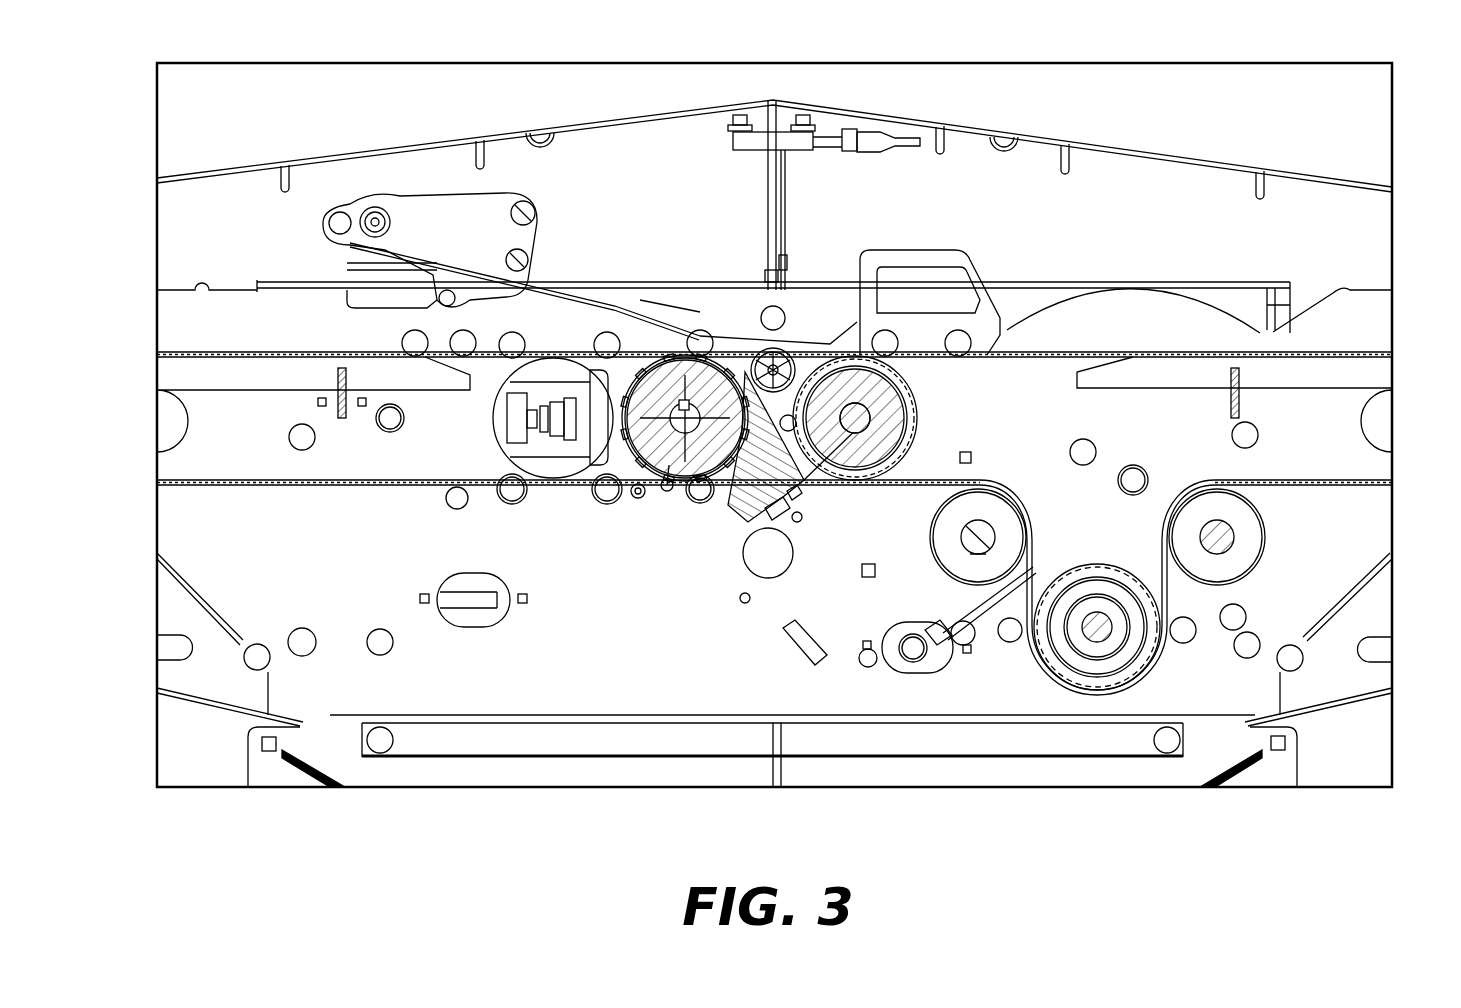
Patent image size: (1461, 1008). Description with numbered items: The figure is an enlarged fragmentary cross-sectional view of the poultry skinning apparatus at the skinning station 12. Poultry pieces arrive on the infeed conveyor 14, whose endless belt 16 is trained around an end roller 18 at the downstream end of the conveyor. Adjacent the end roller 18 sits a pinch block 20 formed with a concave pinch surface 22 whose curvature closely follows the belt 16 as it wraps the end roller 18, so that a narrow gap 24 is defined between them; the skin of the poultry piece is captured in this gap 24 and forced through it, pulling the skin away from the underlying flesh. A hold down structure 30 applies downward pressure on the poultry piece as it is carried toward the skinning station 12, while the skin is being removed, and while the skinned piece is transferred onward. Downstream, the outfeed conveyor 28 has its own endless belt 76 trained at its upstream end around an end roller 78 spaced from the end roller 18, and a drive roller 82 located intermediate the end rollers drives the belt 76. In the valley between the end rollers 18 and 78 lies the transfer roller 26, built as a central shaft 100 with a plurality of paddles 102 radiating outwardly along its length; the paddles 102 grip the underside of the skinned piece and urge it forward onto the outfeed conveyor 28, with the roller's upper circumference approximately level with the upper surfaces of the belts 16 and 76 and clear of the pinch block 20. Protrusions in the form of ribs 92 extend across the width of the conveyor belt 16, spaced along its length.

The skinning station 12 is at (700, 308).
The infeed conveyor 14 is at (490, 492).
The endless belt 16 is at (228, 483).
The end roller 18 is at (668, 470).
The pinch block 20 is at (747, 462).
The concave pinch surface 22 is at (808, 482).
The gap 24 is at (793, 475).
The transfer roller 26 is at (762, 350).
The outfeed conveyor 28 is at (1358, 347).
The hold down structure 30 is at (605, 305).
The endless belt 76 is at (1393, 486).
The end roller 78 is at (883, 448).
The drive roller 82 is at (1082, 678).
The ribs 92 is at (872, 342).
The central shaft 100 is at (790, 352).
The paddles 102 is at (815, 355).